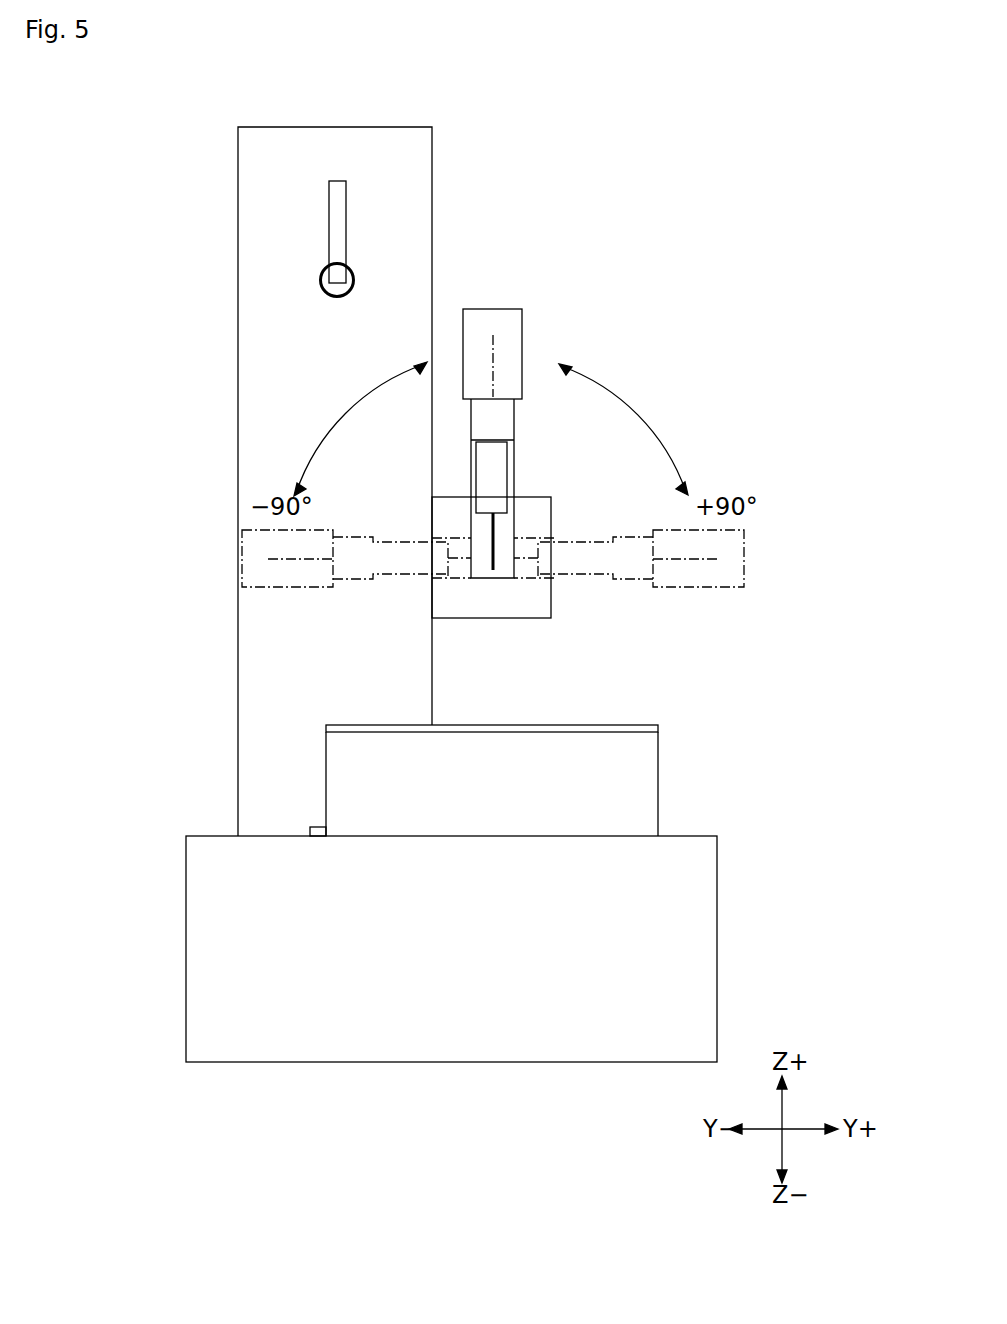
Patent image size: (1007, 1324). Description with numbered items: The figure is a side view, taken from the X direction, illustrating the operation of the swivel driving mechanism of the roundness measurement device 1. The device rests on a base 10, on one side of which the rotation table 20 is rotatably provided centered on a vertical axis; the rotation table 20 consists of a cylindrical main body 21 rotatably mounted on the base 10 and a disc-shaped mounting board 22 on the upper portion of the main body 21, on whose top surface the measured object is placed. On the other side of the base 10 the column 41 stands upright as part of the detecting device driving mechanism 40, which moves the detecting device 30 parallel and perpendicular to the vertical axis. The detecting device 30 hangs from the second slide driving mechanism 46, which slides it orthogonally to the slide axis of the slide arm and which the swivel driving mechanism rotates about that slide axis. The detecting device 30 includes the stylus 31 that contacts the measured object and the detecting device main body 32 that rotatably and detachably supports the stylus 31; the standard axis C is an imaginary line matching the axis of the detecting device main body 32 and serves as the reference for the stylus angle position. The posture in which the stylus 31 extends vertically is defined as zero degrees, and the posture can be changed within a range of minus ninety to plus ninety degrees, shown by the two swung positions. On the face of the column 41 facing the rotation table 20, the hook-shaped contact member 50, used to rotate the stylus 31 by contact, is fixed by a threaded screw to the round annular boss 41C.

The roundness measurement device 1 is at (682, 145).
The base 10 is at (712, 979).
The rotation table 20 is at (490, 773).
The main body 21 is at (332, 787).
The mounting board 22 is at (330, 731).
The detecting device 30 is at (537, 528).
The stylus 31 is at (497, 530).
The detecting device main body 32 is at (500, 463).
The detecting device driving mechanism 40 is at (335, 447).
The column 41 is at (268, 137).
The boss 41C is at (352, 291).
The second slide driving mechanism 46 is at (517, 416).
The contact member 50 is at (332, 245).
The standard axis C is at (494, 350).